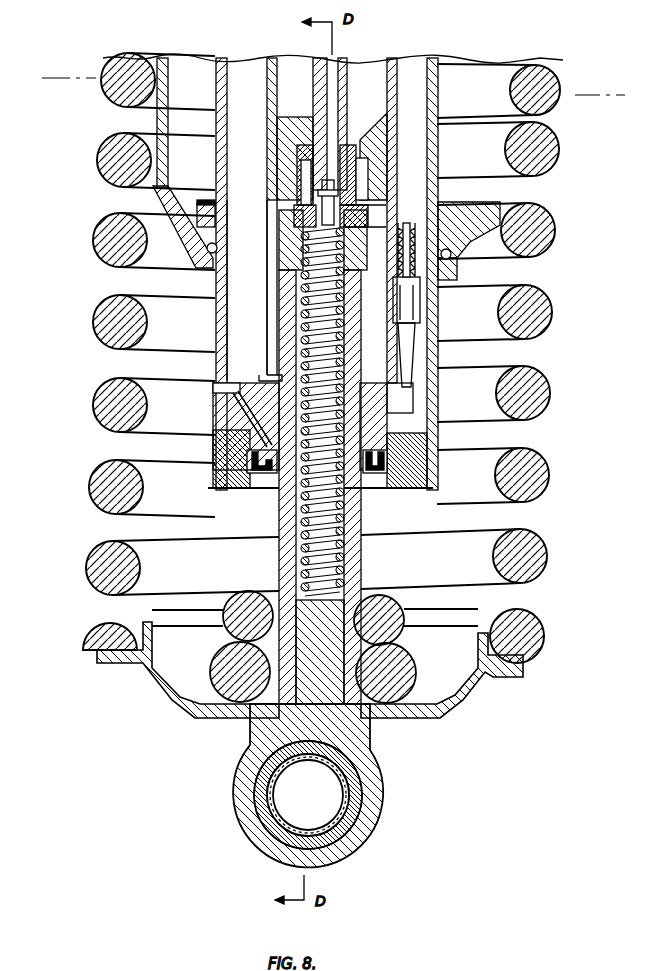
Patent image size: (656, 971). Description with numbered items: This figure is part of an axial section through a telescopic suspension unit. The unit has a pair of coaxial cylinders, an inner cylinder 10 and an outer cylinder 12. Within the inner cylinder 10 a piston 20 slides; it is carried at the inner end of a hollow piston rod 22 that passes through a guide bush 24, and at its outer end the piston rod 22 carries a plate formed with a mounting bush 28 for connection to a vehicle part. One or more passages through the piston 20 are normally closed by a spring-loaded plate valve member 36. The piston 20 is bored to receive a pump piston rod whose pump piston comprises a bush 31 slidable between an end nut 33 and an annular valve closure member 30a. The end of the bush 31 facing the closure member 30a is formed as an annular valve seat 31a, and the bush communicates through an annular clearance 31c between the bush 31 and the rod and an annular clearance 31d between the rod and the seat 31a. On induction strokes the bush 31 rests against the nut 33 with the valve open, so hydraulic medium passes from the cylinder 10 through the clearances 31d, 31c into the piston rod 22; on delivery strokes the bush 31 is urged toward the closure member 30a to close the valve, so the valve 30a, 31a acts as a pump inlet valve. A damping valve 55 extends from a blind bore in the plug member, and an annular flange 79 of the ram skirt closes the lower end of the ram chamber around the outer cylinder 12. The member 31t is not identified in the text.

The inner cylinder 10 is at (264, 285).
The outer cylinder 12 is at (236, 332).
The piston 20 is at (277, 128).
The hollow piston rod 22 is at (284, 262).
The guide bush 24 is at (248, 380).
The mounting bush 28 is at (247, 796).
The annular valve closure member 30a is at (342, 147).
The bush 31 is at (368, 207).
The annular valve seat 31a is at (300, 150).
The annular clearance 31c is at (300, 187).
The annular clearance 31d is at (358, 170).
The valve stem 31t is at (295, 212).
The end nut 33 is at (300, 228).
The spring-loaded plate valve member 36 is at (283, 197).
The damping valve 55 is at (413, 328).
The annular flange 79 is at (500, 234).